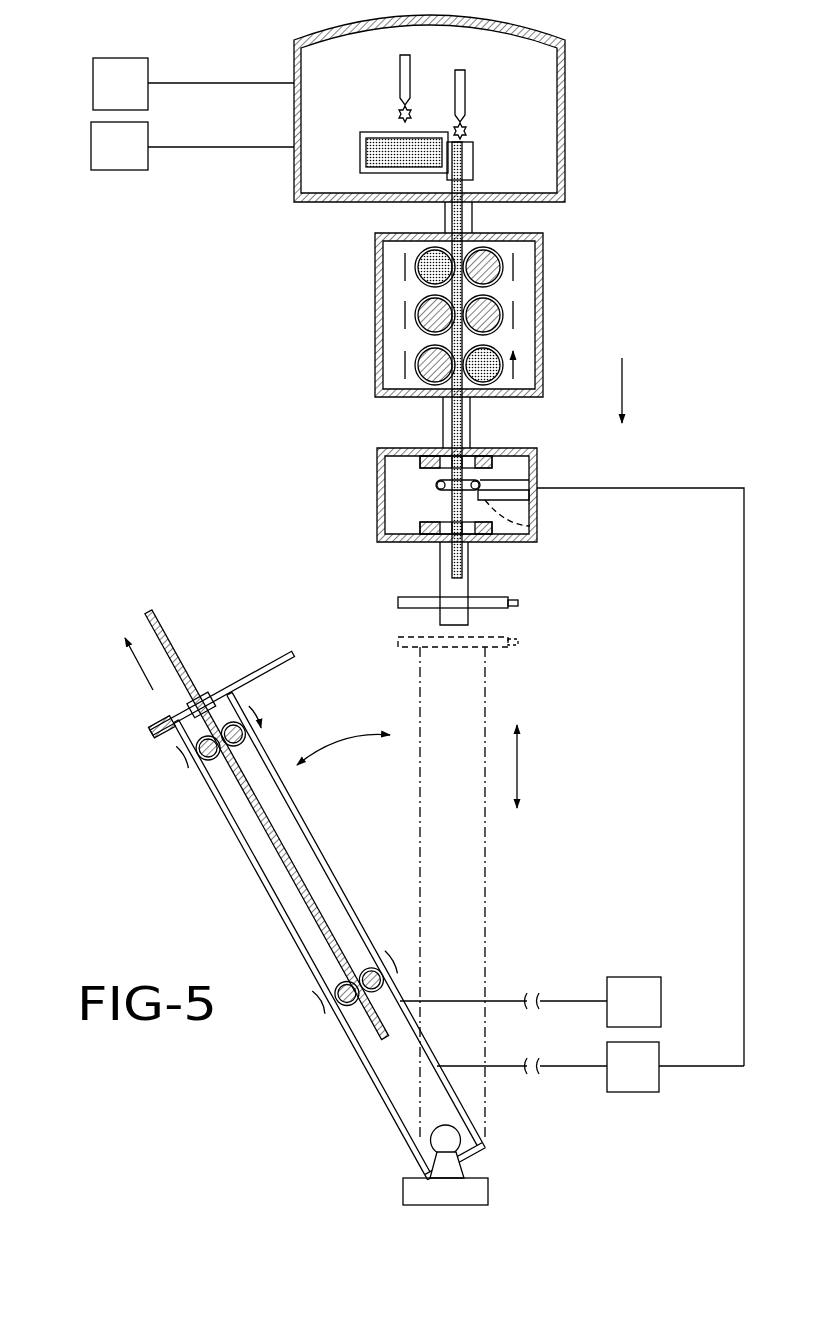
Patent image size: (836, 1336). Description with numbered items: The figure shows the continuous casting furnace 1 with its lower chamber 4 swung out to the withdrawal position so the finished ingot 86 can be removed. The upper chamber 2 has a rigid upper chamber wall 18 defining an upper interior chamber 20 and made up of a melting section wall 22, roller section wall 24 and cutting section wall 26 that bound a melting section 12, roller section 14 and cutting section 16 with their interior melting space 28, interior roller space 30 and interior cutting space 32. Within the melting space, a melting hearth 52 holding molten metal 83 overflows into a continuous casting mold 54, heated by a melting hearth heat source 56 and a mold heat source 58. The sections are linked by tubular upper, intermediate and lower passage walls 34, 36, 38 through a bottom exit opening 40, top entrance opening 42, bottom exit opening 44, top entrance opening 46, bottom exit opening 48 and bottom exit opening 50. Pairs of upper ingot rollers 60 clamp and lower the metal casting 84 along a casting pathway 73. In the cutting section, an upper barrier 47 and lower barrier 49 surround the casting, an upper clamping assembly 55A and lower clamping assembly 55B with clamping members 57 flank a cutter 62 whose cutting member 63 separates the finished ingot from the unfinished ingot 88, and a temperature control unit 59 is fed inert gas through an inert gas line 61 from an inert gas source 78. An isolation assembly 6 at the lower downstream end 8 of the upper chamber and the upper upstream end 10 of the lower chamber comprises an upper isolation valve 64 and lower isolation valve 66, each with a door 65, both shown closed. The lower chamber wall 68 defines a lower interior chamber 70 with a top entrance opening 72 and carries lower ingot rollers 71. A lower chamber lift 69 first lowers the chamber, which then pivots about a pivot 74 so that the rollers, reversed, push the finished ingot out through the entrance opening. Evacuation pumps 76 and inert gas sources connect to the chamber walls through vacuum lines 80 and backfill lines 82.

The continuous casting furnace 1 is at (637, 125).
The upper chamber 2 is at (406, 676).
The lower chamber 4 is at (369, 893).
The isolation assembly 6 is at (383, 653).
The lower downstream end 8 is at (461, 612).
The upper upstream end 10 is at (500, 660).
The melting section 12 is at (414, 129).
The roller section 14 is at (392, 315).
The cutting section 16 is at (396, 492).
The upper chamber wall 18 is at (367, 129).
The upper interior chamber 20 is at (385, 129).
The melting section wall 22 is at (367, 129).
The roller section wall 24 is at (392, 315).
The cutting section wall 26 is at (396, 492).
The interior melting space 28 is at (335, 178).
The interior roller space 30 is at (395, 305).
The interior cutting space 32 is at (400, 470).
The upper passage wall 34 is at (474, 218).
The intermediate passage wall 36 is at (474, 410).
The lower passage wall 38 is at (472, 612).
The bottom exit opening 40 is at (466, 180).
The top entrance opening 42 is at (443, 212).
The bottom exit opening 44 is at (443, 408).
The top entrance opening 46 is at (445, 450).
The upper barrier 47 is at (472, 450).
The bottom exit opening 48 is at (443, 548).
The lower barrier 49 is at (472, 552).
The bottom exit opening 50 is at (455, 628).
The melting hearth 52 is at (386, 123).
The continuous casting mold 54 is at (475, 162).
The upper clamp 55A is at (462, 486).
The lower clamp 55B is at (416, 526).
The melting hearth heat source 56 is at (398, 66).
The clamping members 57 is at (440, 518).
The mold heat source 58 is at (467, 88).
The temperature control unit 59 is at (432, 488).
The upper ingot rollers 60 is at (474, 316).
The inert gas line 61 is at (742, 748).
The cutter 62 is at (530, 498).
The cutting member 63 is at (533, 522).
The upper isolation valve 64 is at (383, 653).
The door 65 is at (518, 604).
The lower isolation valve 66 is at (350, 702).
The lower chamber wall 68 is at (488, 862).
The lower chamber lift 69 is at (403, 1190).
The lower interior chamber 70 is at (268, 856).
The lower ingot rollers 71 is at (245, 742).
The top entrance opening 72 is at (205, 700).
The casting pathway 73 is at (440, 350).
The pivot 74 is at (440, 1128).
The evacuation pump 76 is at (91, 150).
The inert gas source 78 is at (93, 86).
The vacuum line 80 is at (220, 147).
The backfill line 82 is at (220, 83).
The molten metal 83 is at (420, 150).
The metal casting 84 is at (526, 316).
The finished ingot 86 is at (168, 632).
The unfinished ingot 88 is at (500, 318).